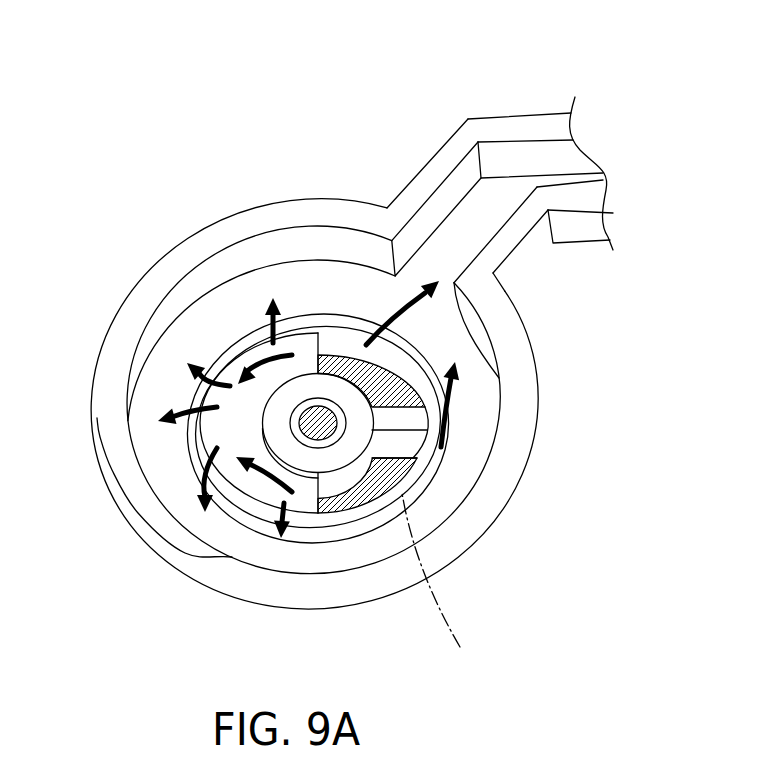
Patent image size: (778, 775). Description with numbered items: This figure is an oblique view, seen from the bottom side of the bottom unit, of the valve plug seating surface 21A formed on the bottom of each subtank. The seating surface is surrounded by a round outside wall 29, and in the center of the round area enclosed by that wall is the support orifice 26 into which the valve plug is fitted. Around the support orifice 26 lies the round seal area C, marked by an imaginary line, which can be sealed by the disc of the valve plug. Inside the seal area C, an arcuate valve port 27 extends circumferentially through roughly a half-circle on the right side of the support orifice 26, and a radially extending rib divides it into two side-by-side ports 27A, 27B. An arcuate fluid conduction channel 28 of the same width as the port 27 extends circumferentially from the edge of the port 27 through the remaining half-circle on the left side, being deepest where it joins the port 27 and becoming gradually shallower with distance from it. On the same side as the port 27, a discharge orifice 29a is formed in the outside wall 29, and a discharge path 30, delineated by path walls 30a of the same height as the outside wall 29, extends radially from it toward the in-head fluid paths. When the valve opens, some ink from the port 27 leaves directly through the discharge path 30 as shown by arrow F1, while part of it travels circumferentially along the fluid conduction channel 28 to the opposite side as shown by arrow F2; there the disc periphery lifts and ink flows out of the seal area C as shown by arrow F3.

The valve plug seating surface 21A is at (281, 150).
The outside wall 29 is at (199, 248).
The discharge orifice 29a is at (443, 257).
The discharge path 30 is at (562, 180).
The path walls 30a is at (536, 112).
The fluid conduction channel 28 is at (222, 422).
The valve port 27 is at (612, 383).
The port 27A is at (415, 352).
The port 27B is at (417, 458).
The support orifice 26 is at (325, 430).
The seal area C is at (440, 575).
The arrow F1 is at (405, 302).
The arrow F2 is at (262, 480).
The arrow F3 is at (195, 502).